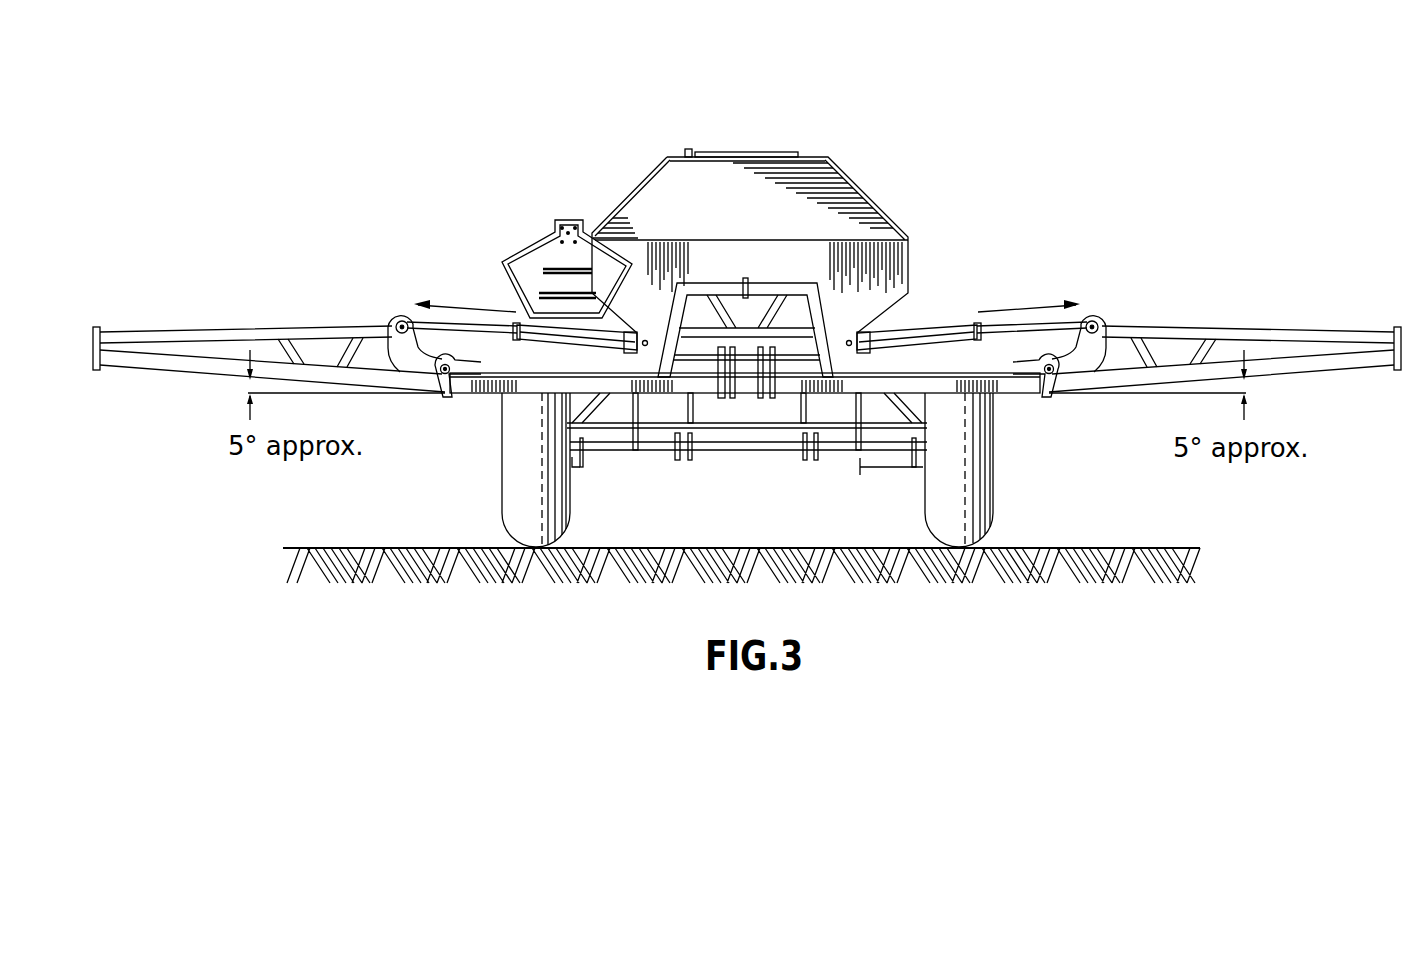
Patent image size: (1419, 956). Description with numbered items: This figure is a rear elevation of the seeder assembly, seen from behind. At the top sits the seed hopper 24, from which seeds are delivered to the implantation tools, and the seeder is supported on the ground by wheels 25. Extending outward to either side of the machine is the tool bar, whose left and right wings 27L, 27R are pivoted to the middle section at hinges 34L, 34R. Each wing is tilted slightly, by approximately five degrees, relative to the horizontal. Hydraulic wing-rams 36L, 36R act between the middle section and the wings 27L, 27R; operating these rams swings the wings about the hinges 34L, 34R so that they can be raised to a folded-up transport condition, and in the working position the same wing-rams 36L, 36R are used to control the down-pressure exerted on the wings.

The seed hopper 24 is at (805, 165).
The wheel 25 is at (507, 500).
The left wing 27L is at (183, 331).
The right wing 27R is at (1247, 330).
The left hinge 34L is at (446, 398).
The right hinge 34R is at (1048, 398).
The left hydraulic wing-ram 36L is at (453, 320).
The right hydraulic wing-ram 36R is at (952, 330).